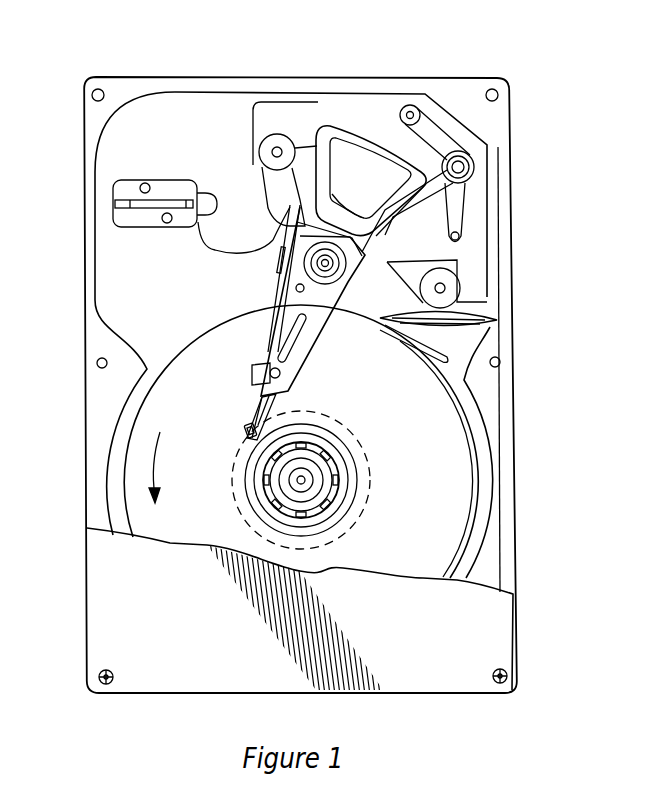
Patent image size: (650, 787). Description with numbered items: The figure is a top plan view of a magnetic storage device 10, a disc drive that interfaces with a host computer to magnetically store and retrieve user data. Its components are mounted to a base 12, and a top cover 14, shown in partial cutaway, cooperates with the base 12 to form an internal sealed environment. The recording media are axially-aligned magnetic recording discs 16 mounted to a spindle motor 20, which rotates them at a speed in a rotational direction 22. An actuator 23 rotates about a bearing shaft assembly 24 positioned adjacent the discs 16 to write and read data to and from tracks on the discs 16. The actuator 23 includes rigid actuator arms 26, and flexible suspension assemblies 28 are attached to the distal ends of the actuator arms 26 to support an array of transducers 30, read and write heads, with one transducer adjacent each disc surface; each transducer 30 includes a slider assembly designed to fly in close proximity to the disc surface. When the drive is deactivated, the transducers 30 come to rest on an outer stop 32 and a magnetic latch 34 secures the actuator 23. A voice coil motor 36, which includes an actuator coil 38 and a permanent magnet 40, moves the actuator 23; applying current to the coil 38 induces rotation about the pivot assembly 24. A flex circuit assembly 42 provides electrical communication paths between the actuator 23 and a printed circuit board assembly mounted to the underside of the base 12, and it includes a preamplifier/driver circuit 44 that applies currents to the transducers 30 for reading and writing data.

The magnetic storage device 10 is at (152, 56).
The base 12 is at (120, 268).
The top cover 14 is at (110, 586).
The magnetic recording discs 16 is at (455, 492).
The spindle motor 20 is at (333, 467).
The rotational direction 22 is at (154, 458).
The actuator 23 is at (321, 313).
The bearing shaft assembly 24 is at (343, 284).
The rigid actuator arms 26 is at (300, 343).
The flexible suspension assemblies 28 is at (266, 404).
The transducers 30 is at (250, 431).
The outer stop 32 is at (362, 523).
The magnetic latch 34 is at (460, 207).
The voice coil motor 36 is at (360, 110).
The actuator coil 38 is at (333, 127).
The permanent magnet 40 is at (432, 244).
The flex circuit assembly 42 is at (208, 263).
The preamplifier/driver circuit 44 is at (268, 258).